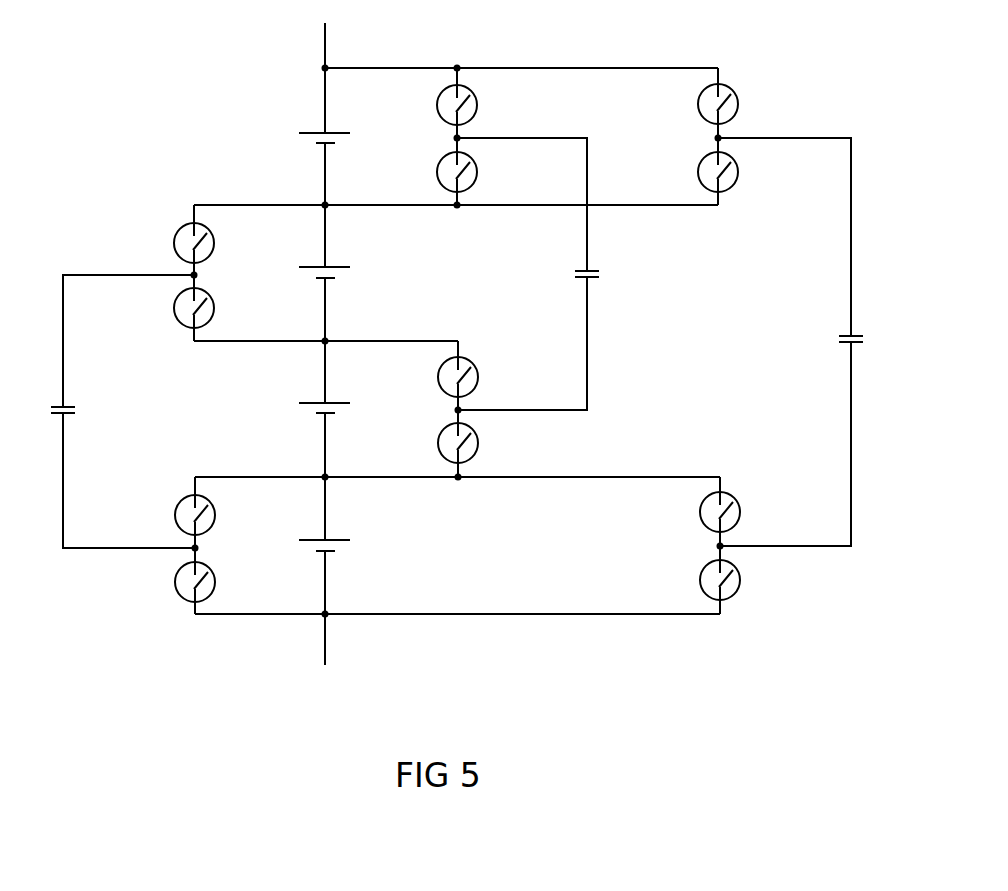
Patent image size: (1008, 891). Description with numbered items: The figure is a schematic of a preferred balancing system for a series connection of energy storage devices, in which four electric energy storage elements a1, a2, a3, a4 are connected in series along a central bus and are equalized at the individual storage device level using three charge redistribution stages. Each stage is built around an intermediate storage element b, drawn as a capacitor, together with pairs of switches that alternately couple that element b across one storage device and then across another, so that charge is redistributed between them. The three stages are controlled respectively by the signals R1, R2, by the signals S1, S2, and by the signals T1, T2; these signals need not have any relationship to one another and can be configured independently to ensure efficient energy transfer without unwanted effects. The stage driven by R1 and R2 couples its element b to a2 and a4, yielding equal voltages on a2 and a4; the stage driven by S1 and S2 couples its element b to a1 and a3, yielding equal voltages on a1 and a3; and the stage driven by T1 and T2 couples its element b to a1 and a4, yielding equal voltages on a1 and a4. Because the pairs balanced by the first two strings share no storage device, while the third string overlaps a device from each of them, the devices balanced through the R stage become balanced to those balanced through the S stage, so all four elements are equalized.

The electric energy storage element a1 is at (306, 136).
The electric energy storage element a2 is at (306, 275).
The electric energy storage element a3 is at (306, 398).
The electric energy storage element a4 is at (306, 545).
The intermediate storage element b is at (457, 343).
The control signal R1 is at (171, 515).
The control signal R2 is at (171, 582).
The control signal S1 is at (483, 377).
The control signal S2 is at (483, 443).
The control signal T1 is at (747, 512).
The control signal T2 is at (747, 580).